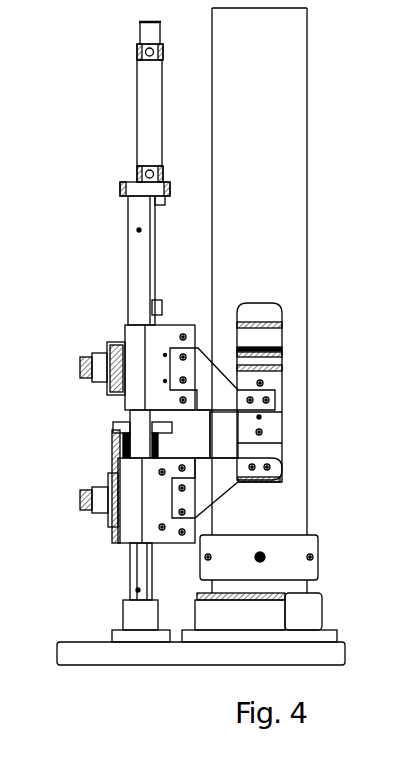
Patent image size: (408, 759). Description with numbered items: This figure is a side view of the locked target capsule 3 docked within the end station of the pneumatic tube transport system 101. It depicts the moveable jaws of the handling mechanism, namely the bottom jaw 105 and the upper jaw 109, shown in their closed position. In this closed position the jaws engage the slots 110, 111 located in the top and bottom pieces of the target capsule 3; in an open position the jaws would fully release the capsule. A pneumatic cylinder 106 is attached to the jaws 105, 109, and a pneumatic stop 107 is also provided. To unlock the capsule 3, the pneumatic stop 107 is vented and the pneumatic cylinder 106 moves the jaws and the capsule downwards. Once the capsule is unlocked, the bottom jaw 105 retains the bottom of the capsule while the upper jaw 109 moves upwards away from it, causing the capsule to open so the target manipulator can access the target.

The pneumatic tube transport system 101 is at (285, 33).
The pneumatic cylinder 106 is at (138, 133).
The target capsule 3 is at (258, 338).
The slot 110 is at (275, 406).
The upper jaw 109 is at (135, 399).
The pneumatic stop 107 is at (118, 446).
The slot 111 is at (281, 466).
The bottom jaw 105 is at (195, 498).